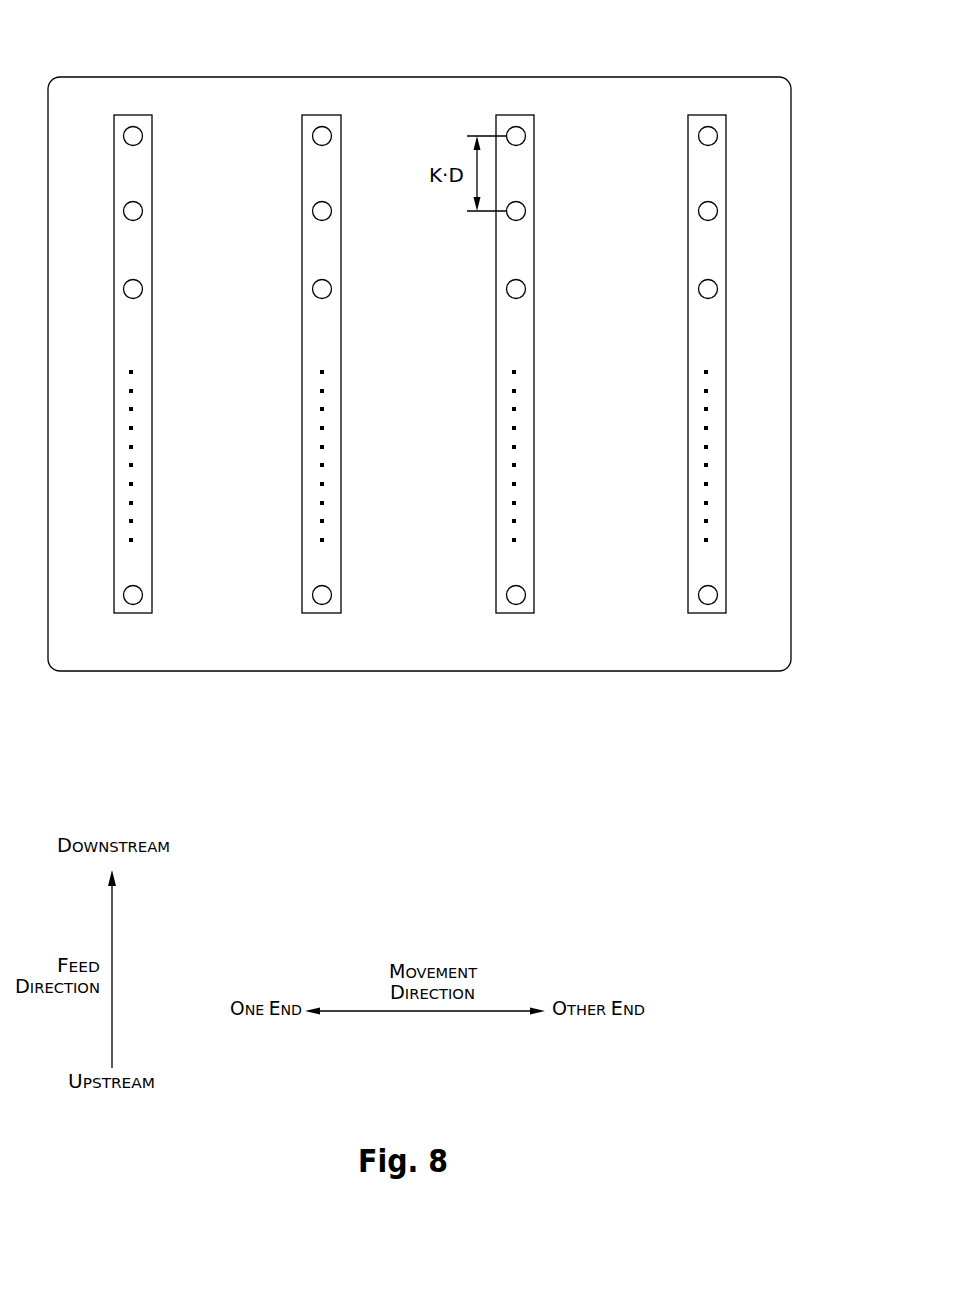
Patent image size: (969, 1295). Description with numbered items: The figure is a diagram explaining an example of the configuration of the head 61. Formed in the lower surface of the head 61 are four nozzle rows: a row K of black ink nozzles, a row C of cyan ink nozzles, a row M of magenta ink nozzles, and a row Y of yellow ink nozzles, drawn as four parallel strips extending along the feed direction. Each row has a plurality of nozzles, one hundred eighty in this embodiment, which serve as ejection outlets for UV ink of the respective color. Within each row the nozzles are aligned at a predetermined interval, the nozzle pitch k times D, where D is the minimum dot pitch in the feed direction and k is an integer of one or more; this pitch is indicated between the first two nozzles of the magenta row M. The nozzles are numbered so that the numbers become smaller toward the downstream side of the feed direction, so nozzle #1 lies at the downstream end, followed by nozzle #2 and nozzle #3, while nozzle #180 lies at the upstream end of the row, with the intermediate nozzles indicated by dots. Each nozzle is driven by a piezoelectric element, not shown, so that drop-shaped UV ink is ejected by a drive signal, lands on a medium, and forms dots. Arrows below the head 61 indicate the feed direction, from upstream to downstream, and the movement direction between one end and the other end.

The head 61 is at (565, 78).
The nozzle # 1 is at (142, 136).
The nozzle # 2 is at (142, 211).
The nozzle # 3 is at (142, 289).
The nozzle # 180 is at (142, 595).
The row of black ink nozzles K is at (128, 613).
The row of cyan ink nozzles C is at (320, 613).
The row of magenta ink nozzles M is at (512, 613).
The row of yellow ink nozzles Y is at (703, 613).